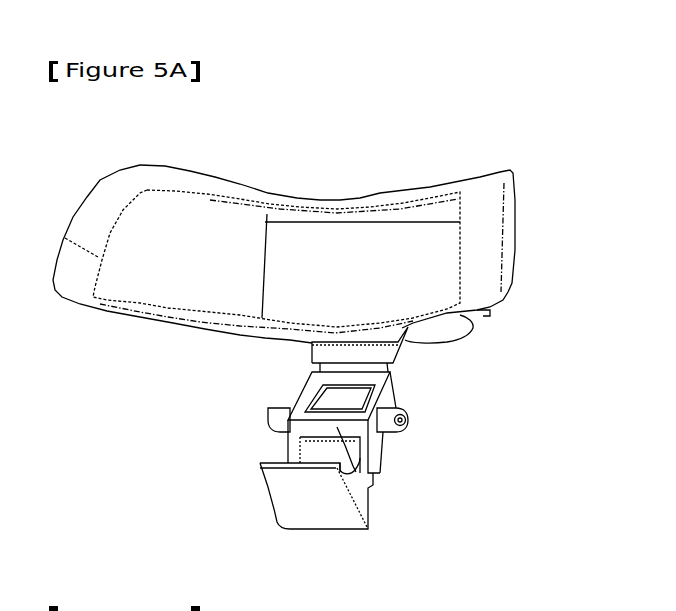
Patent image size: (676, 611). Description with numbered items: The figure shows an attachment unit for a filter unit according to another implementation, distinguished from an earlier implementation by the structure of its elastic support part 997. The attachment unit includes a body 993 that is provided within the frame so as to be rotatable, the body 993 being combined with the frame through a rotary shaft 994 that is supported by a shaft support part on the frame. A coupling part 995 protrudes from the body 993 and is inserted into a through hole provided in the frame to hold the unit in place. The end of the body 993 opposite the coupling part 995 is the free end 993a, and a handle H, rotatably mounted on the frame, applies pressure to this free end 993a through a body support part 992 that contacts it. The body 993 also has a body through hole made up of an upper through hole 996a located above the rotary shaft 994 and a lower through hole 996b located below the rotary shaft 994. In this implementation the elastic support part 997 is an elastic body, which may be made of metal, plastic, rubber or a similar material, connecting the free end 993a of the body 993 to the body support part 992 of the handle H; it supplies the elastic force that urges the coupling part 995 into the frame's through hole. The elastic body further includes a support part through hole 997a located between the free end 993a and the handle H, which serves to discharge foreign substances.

The handle H is at (294, 205).
The body support part 992 is at (405, 338).
The body 993 is at (381, 442).
The free end 993a is at (346, 375).
The rotary shaft 994 is at (379, 441).
The coupling part 995 is at (275, 492).
The upper through hole 996a is at (336, 407).
The lower through hole 996b is at (323, 454).
The elastic support part 997 is at (395, 372).
The support part through hole 997a is at (337, 372).